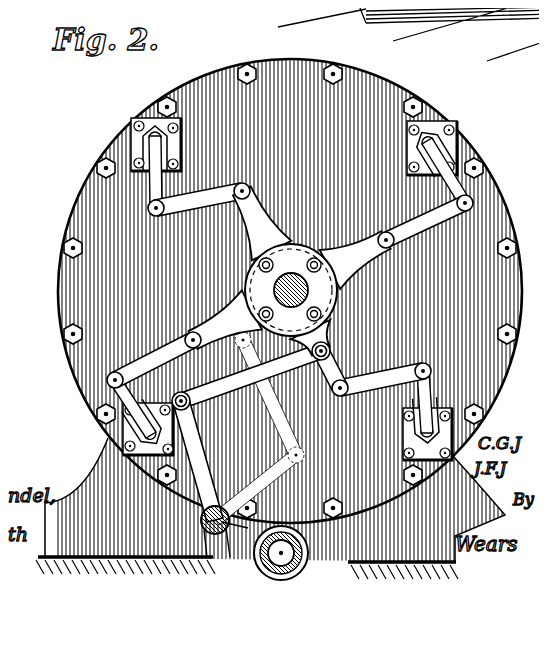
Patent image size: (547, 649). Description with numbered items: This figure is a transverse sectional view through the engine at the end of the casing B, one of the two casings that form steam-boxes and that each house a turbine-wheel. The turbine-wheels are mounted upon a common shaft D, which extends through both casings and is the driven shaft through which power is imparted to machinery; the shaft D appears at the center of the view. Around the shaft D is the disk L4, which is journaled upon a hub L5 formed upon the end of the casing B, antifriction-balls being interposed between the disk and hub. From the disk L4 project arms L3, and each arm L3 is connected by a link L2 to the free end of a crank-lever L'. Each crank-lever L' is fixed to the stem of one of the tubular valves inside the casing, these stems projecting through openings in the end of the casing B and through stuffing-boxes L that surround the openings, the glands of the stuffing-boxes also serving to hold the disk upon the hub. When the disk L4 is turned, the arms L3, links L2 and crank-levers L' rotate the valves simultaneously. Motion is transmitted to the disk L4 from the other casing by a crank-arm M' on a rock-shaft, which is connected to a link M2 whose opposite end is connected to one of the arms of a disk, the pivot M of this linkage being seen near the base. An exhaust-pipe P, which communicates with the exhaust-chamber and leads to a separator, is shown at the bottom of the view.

The casing B is at (383, 83).
The stuffing-box L is at (284, 286).
The crank-lever L' is at (278, 287).
The link L2 is at (213, 197).
The arm L3 is at (253, 200).
The disk L4 is at (240, 264).
The hub L5 is at (360, 247).
The shaft D is at (289, 266).
The pivot pin M is at (224, 542).
The crank-arm M' is at (248, 433).
The link M2 is at (274, 394).
The exhaust-pipe P is at (301, 550).